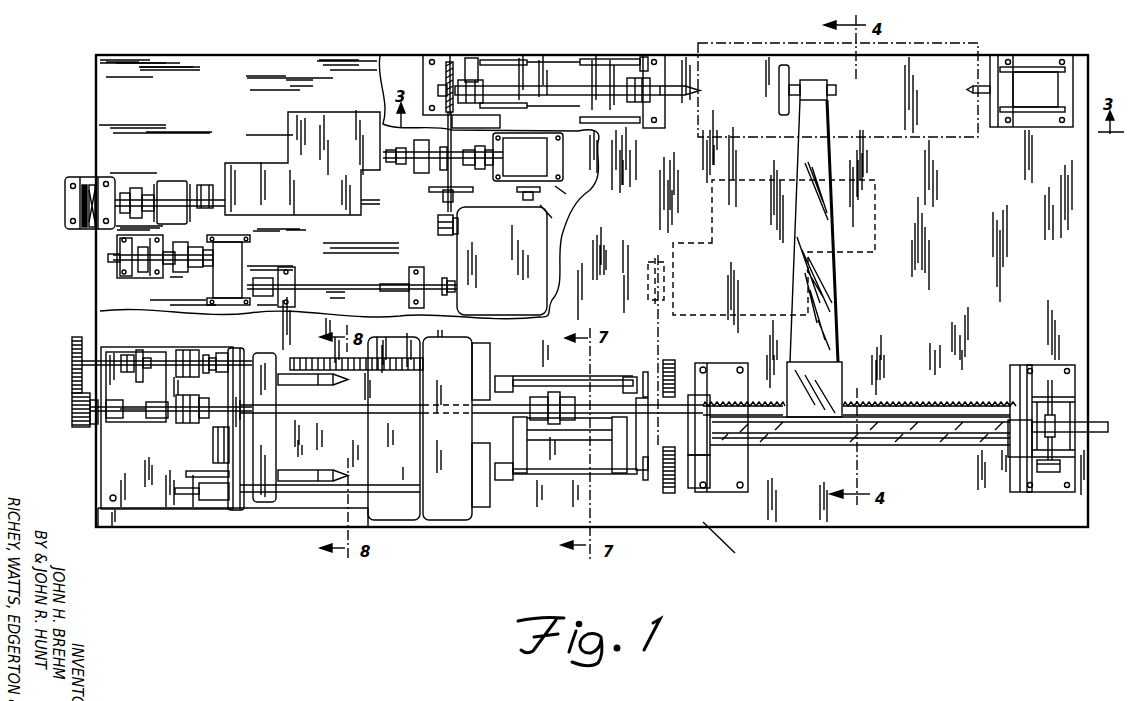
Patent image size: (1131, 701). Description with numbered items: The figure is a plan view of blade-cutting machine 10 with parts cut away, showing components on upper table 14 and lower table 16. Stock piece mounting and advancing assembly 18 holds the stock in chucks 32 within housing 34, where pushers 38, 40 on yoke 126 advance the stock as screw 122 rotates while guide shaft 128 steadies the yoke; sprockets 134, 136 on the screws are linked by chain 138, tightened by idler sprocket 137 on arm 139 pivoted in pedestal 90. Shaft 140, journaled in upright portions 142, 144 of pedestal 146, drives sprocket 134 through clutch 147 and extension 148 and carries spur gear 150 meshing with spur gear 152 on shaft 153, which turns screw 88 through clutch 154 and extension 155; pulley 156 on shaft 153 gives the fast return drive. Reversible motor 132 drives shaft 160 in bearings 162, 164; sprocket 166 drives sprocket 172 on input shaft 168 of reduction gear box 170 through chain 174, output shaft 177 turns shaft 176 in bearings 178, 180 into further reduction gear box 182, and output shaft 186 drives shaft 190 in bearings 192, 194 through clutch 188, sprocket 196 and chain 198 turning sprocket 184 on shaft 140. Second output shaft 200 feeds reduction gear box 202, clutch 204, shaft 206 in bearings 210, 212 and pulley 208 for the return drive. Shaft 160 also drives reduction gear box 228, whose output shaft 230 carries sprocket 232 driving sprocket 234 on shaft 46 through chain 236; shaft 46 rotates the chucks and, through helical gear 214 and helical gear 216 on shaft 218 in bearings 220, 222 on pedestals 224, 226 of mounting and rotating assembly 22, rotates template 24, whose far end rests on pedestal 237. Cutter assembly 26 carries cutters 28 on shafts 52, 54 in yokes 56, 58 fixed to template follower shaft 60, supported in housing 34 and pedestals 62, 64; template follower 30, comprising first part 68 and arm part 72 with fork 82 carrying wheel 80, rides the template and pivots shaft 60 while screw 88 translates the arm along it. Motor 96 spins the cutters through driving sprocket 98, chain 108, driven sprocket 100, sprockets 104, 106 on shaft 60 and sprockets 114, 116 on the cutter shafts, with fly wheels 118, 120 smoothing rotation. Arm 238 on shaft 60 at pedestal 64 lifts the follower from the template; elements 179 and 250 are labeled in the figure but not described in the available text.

The machine 10 is at (728, 545).
The upper table 14 is at (482, 524).
The lower table 16 is at (157, 91).
The stock piece mounting and advancing assembly 18 is at (283, 512).
The mounting and rotating assembly 22 is at (645, 132).
The template 24 is at (925, 138).
The cutter mounting, rotating and pivoting assembly 26 is at (602, 372).
The cutters 28 is at (498, 377).
The template follower 30 is at (845, 290).
The chucks 32 is at (493, 354).
The housing 34 is at (415, 522).
The pusher 38 is at (338, 383).
The pusher 40 is at (343, 468).
The shaft 46 is at (447, 425).
The shaft 52 is at (560, 380).
The shaft 54 is at (555, 476).
The yoke 56 is at (526, 453).
The yoke 58 is at (618, 458).
The template follower shaft 60 is at (710, 440).
The pedestal 62 is at (710, 458).
The pedestal 64 is at (1012, 465).
The first elongated part 68 is at (798, 452).
The second elongated arm part 72 is at (835, 342).
The template follower wheel 80 is at (778, 97).
The fork 82 is at (831, 63).
The shaft 88 is at (342, 415).
The pedestal 90 is at (240, 512).
The motor 96 is at (712, 212).
The driving sprocket 98 is at (650, 270).
The driven sprocket 100 is at (666, 494).
The sprocket 104 is at (565, 407).
The sprocket 106 is at (637, 468).
The driven chain 108 is at (662, 330).
The sprocket 114 is at (630, 378).
The sprocket 116 is at (645, 484).
The fly wheel 118 is at (675, 368).
The fly wheel 120 is at (690, 487).
The screw 122 is at (316, 357).
The yoke 126 is at (270, 434).
The first guide shaft 128 is at (323, 493).
The reversible motor 132 is at (302, 163).
The sprocket 134 is at (224, 354).
The sprocket 136 is at (215, 502).
The idler sprocket 137 is at (216, 471).
The chain 138 is at (212, 372).
The arm 139 is at (214, 446).
The shaft 140 is at (126, 355).
The upright portion 142 is at (112, 419).
The upright portion 144 is at (146, 383).
The pedestal 146 is at (456, 129).
The clutch 147 is at (185, 350).
The short extension 148 is at (206, 355).
The spur gear 150 is at (72, 345).
The spur gear 152 is at (72, 423).
The shaft 153 is at (135, 425).
The clutch 154 is at (183, 424).
The extension 155 is at (204, 418).
The pulley 156 is at (92, 428).
The shaft 160 is at (412, 163).
The bearing 162 is at (440, 176).
The bearing 164 is at (467, 165).
The sprocket 166 is at (417, 150).
The input shaft 168 is at (458, 236).
The reduction gear box 170 is at (502, 261).
The sprocket 172 is at (436, 228).
The chain 174 is at (440, 208).
The shaft 176 is at (352, 286).
The output shaft 177 is at (450, 292).
The bearing 178 is at (412, 294).
The bearing bracket 179 is at (440, 285).
The bearing 180 is at (296, 296).
The further reduction gear box 182 is at (243, 262).
The sprocket 184 is at (144, 356).
The output shaft 186 is at (197, 273).
The clutch 188 is at (194, 242).
The shaft 190 is at (181, 247).
The bearing 192 is at (150, 272).
The bearing 194 is at (113, 250).
The sprocket 196 is at (125, 272).
The chain 198 is at (137, 294).
The second output shaft 200 is at (197, 185).
The reduction gear box 202 is at (172, 181).
The clutch 204 is at (145, 188).
The shaft 206 is at (132, 192).
The pulley 208 is at (66, 196).
The bearing 210 is at (70, 212).
The bearing 212 is at (96, 180).
The helical gear 214 is at (439, 88).
The helical gear 216 is at (451, 60).
The shaft 218 is at (553, 94).
The bearing 220 is at (484, 91).
The bearing 222 is at (630, 89).
The pedestal 224 is at (478, 62).
The pedestal 226 is at (650, 57).
The reduction gear box 228 is at (528, 157).
The output shaft 230 is at (560, 190).
The sprocket 232 is at (548, 213).
The sprocket 234 is at (460, 192).
The chain 236 is at (527, 201).
The pedestal 237 is at (1033, 62).
The arm 238 is at (1055, 390).
The thumb screw 250 is at (1050, 478).